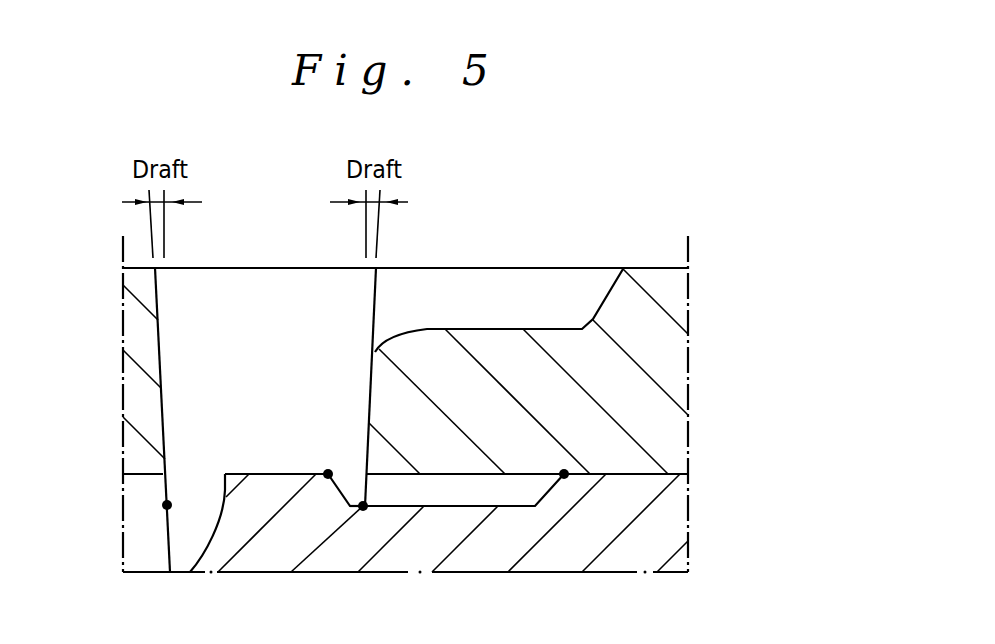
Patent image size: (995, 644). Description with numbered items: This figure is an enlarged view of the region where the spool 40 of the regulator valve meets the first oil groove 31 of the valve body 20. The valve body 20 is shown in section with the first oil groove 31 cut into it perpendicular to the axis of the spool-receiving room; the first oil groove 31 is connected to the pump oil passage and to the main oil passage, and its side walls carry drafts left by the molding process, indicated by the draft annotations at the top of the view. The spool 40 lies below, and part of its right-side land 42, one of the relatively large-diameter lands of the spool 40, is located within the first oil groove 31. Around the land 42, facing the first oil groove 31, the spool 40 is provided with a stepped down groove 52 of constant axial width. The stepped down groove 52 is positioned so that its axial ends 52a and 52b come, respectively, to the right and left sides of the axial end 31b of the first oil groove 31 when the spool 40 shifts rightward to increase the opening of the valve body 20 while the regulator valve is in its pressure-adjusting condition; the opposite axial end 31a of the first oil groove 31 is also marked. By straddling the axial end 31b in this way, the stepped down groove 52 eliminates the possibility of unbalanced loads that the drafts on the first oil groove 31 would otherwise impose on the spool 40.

The valve body 20 is at (677, 343).
The first oil groove 31 is at (285, 363).
The axial end of the first oil groove 31a is at (167, 505).
The axial end of the first oil groove 31b is at (363, 506).
The spool 40 is at (668, 539).
The right-side land 42 is at (258, 473).
The stepped down groove 52 is at (458, 490).
The axial end of the stepped down groove 52a is at (328, 474).
The axial end of the stepped down groove 52b is at (564, 474).